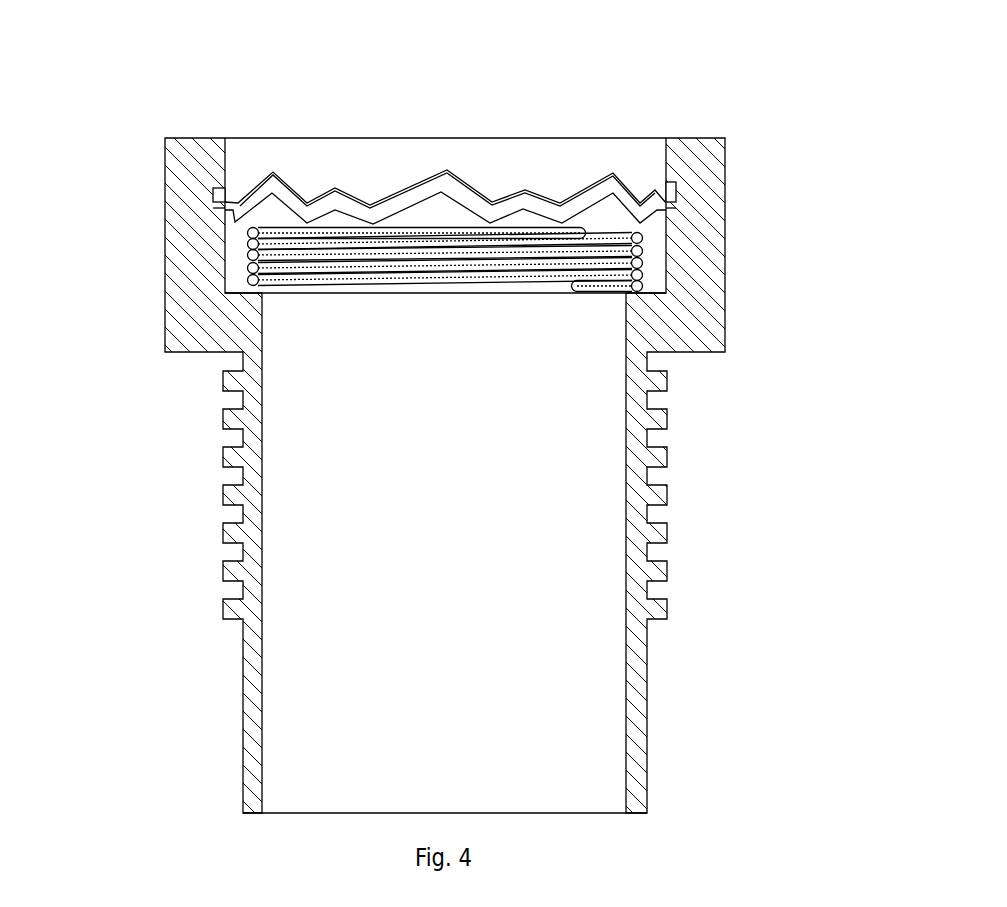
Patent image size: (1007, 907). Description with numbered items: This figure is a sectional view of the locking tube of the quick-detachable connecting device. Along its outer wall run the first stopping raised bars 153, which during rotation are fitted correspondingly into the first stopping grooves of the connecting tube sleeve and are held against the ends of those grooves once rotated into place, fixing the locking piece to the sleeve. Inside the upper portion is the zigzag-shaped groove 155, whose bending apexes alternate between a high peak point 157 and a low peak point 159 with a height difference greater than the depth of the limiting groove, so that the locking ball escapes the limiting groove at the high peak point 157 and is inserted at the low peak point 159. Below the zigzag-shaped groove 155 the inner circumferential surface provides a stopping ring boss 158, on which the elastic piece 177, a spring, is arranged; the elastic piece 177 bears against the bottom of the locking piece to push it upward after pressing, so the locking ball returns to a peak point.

The first stopping raised bar 153 is at (667, 532).
The zigzag-shaped groove 155 is at (385, 207).
The high peak point 157 is at (447, 170).
The stopping ring boss 158 is at (647, 290).
The low peak point 159 is at (525, 190).
The elastic piece 177 is at (295, 262).